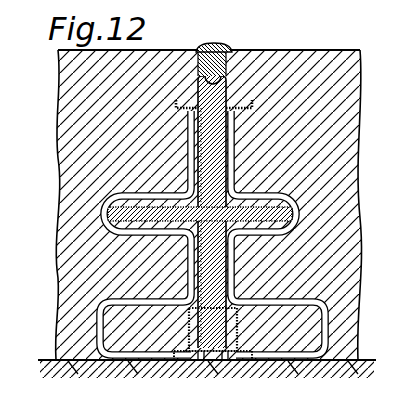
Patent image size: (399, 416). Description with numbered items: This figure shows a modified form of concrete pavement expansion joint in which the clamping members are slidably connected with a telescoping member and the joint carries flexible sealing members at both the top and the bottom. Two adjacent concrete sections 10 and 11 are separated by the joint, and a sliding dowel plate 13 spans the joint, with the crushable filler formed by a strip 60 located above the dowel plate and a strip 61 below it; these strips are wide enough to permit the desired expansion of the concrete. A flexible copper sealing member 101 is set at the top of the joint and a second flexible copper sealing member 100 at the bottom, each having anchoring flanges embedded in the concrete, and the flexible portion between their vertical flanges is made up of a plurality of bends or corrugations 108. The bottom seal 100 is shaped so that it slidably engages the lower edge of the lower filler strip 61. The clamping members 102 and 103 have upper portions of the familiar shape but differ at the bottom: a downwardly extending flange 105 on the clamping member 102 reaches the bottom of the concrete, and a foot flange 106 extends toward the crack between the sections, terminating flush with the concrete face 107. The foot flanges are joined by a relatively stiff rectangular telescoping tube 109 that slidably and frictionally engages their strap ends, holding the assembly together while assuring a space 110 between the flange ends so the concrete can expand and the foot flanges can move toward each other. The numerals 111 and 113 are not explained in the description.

The concrete section 10 is at (62, 67).
The concrete section 11 is at (296, 58).
The sliding dowel plate 13 is at (96, 227).
The filler strip 60 is at (232, 122).
The filler strip 61 is at (232, 258).
The flexible copper sealing member 100 is at (235, 296).
The flexible copper sealing member 101 is at (225, 92).
The clamping member 102 is at (180, 240).
The clamping member 103 is at (232, 238).
The downwardly extending flange 105 is at (90, 310).
The foot flange 106 is at (113, 353).
The concrete face 107 is at (195, 112).
The bends or corrugations 108 is at (201, 78).
The telescoping tube 109 is at (207, 352).
The space 110 is at (186, 350).
The upper bend of liner 111 is at (110, 186).
The horizontal plate 113 is at (135, 205).